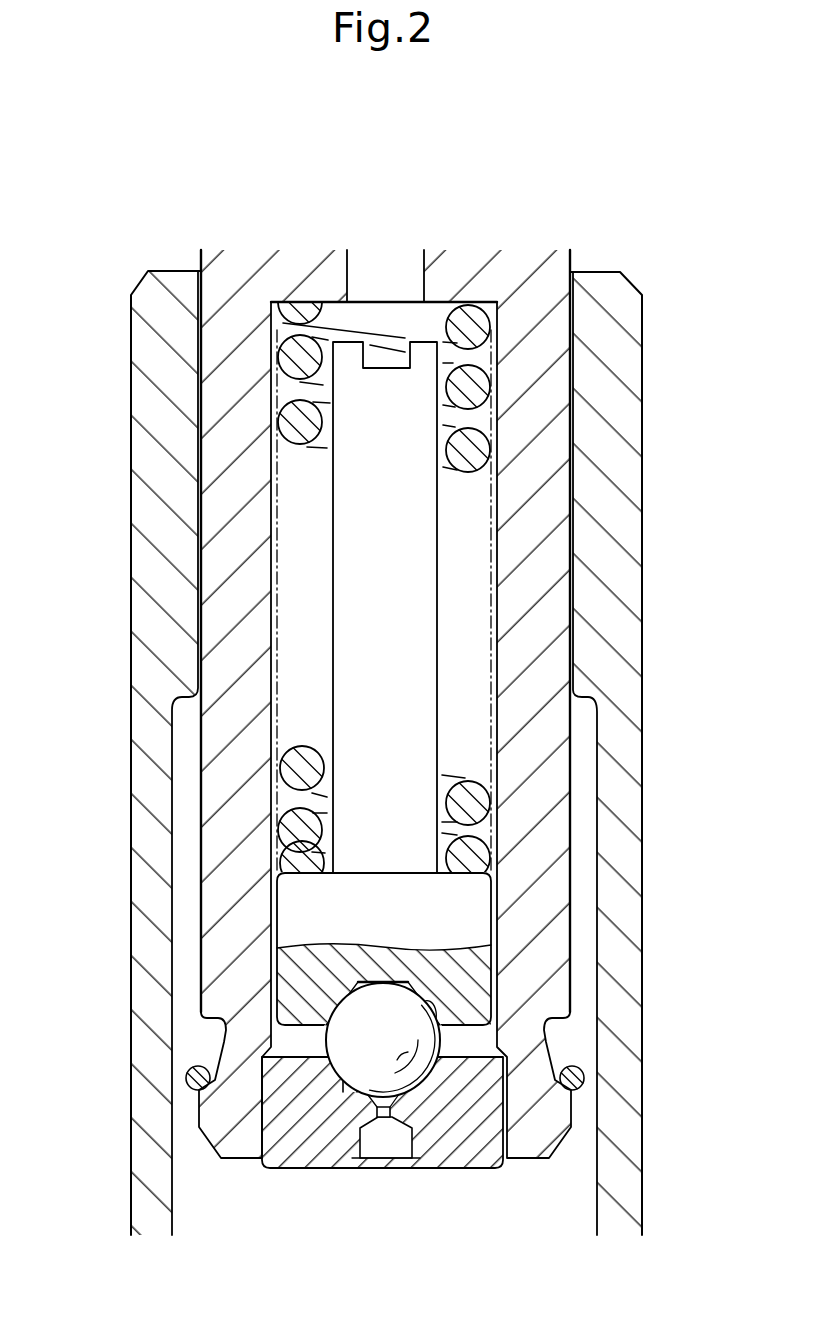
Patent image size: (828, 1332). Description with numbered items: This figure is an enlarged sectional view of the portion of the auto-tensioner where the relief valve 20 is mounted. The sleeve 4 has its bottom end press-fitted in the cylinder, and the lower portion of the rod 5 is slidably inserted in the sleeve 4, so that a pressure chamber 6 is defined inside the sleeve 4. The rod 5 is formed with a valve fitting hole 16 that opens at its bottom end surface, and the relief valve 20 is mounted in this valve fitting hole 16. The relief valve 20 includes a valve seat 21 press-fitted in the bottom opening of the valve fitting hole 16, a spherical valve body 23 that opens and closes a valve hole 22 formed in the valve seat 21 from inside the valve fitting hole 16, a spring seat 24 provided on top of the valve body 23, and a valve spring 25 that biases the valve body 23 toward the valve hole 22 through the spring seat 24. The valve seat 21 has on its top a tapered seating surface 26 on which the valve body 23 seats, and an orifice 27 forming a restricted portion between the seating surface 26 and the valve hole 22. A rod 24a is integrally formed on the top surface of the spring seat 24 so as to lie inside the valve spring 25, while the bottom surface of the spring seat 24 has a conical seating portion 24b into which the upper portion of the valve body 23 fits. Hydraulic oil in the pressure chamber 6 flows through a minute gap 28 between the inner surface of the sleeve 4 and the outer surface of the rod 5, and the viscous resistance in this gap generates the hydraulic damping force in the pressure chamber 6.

The sleeve 4 is at (140, 569).
The rod 5 is at (240, 262).
The pressure chamber 6 is at (197, 1196).
The valve fitting hole 16 is at (485, 728).
The relief valve 20 is at (416, 1156).
The valve seat 21 is at (302, 1150).
The valve hole 22 is at (402, 1145).
The valve body 23 is at (345, 1047).
The spring seat 24 is at (400, 686).
The rod 24a is at (412, 563).
The conical seating portion 24b is at (443, 1042).
The valve spring 25 is at (290, 762).
The seating surface 26 is at (350, 1078).
The orifice 27 is at (383, 1120).
The minute gap 28 is at (575, 484).